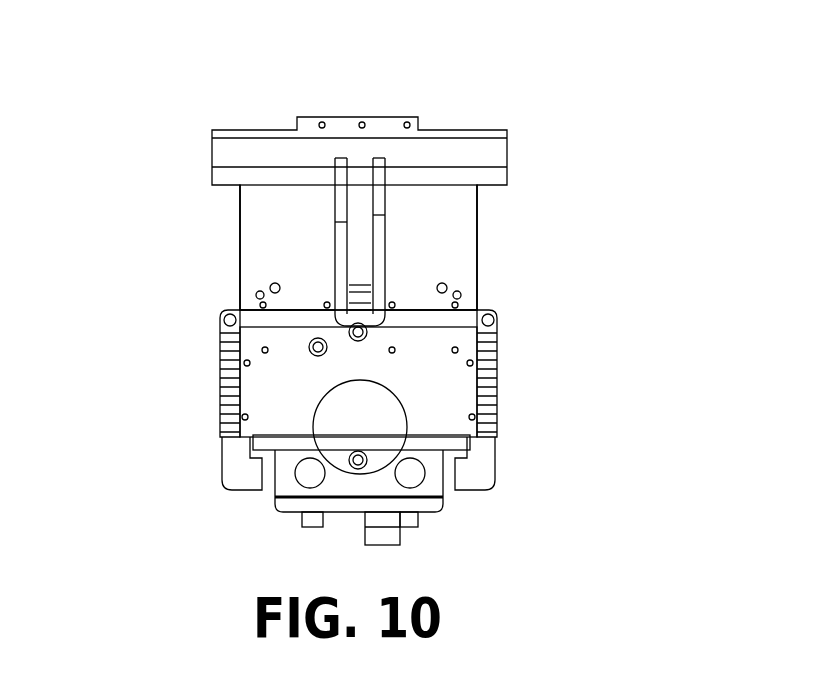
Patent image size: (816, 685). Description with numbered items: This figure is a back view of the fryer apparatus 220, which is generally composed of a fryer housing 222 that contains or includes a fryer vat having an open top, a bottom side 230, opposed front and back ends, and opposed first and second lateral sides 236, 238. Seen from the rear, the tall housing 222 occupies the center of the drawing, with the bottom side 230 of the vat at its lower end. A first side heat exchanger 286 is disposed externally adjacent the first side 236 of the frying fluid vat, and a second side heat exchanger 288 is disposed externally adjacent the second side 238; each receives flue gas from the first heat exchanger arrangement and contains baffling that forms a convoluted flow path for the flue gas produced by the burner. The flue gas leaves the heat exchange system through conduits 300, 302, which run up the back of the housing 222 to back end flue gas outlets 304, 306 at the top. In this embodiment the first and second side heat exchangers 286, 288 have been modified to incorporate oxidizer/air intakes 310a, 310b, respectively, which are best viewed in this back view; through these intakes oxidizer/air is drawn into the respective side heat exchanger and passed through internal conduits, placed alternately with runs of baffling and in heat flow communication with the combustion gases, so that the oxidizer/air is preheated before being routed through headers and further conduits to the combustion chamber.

The fryer apparatus 220 is at (441, 93).
The fryer housing 222 is at (228, 211).
The bottom side 230 is at (282, 513).
The first lateral side 236 is at (478, 252).
The second lateral side 238 is at (240, 251).
The first side heat exchanger 286 is at (492, 310).
The second side heat exchanger 288 is at (218, 320).
The conduit 300 is at (384, 215).
The conduit 302 is at (335, 222).
The back end flue gas outlet 304 is at (377, 158).
The back end flue gas outlet 306 is at (341, 158).
The oxidizer/air intake 310a is at (498, 393).
The oxidizer/air intake 310b is at (220, 407).